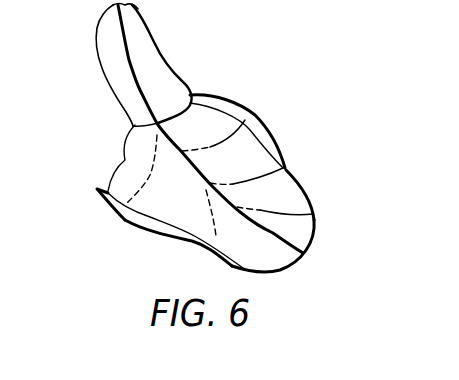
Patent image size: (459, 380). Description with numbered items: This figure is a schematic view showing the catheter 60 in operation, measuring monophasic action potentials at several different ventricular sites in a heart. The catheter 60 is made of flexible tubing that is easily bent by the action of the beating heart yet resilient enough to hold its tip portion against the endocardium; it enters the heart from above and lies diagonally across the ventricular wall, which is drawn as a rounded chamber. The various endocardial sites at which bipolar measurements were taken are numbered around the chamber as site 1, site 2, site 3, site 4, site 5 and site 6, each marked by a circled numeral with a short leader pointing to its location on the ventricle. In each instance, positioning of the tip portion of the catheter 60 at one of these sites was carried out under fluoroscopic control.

The catheter 60 is at (139, 68).
The ventricular site 1 is at (246, 119).
The ventricular site 2 is at (286, 171).
The ventricular site 3 is at (320, 213).
The ventricular site 4 is at (307, 256).
The ventricular site 5 is at (203, 247).
The ventricular site 6 is at (102, 208).